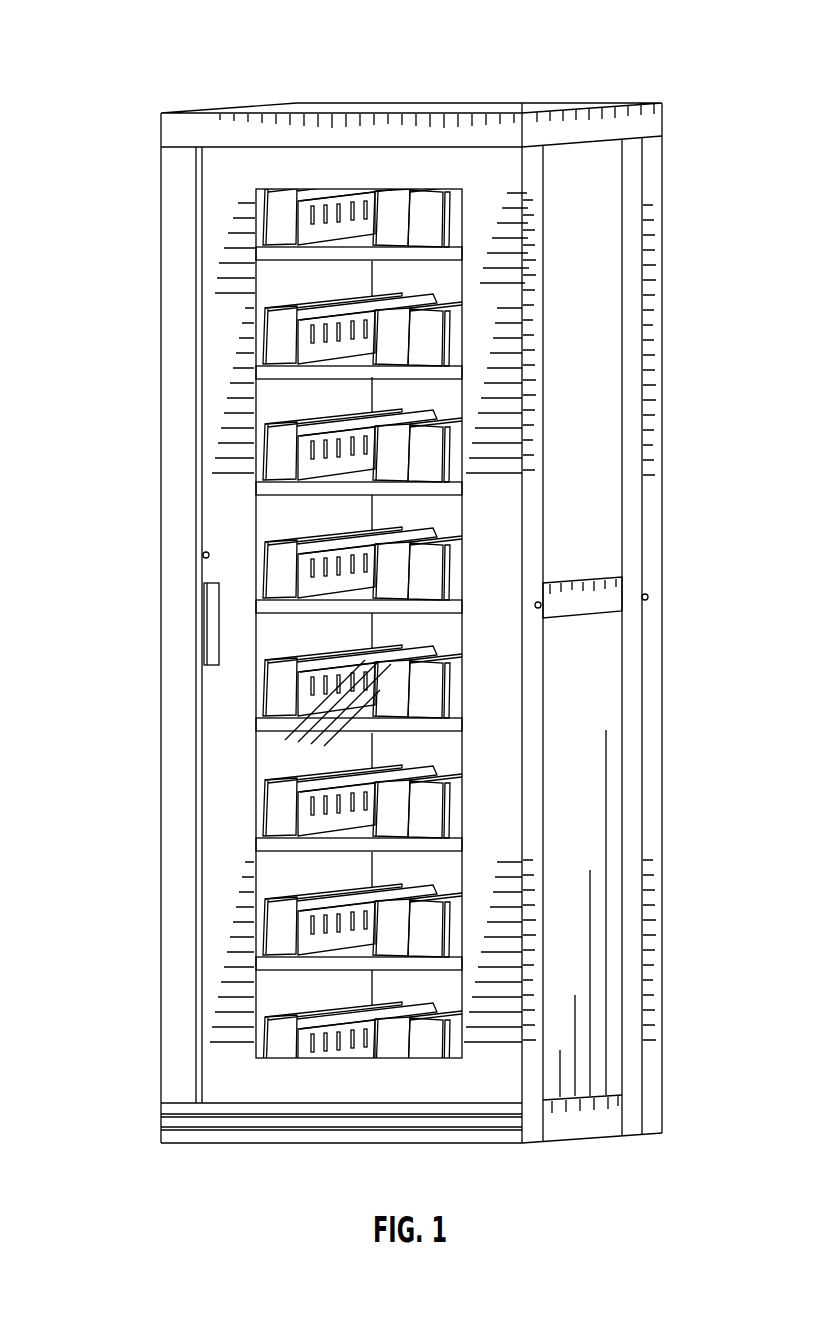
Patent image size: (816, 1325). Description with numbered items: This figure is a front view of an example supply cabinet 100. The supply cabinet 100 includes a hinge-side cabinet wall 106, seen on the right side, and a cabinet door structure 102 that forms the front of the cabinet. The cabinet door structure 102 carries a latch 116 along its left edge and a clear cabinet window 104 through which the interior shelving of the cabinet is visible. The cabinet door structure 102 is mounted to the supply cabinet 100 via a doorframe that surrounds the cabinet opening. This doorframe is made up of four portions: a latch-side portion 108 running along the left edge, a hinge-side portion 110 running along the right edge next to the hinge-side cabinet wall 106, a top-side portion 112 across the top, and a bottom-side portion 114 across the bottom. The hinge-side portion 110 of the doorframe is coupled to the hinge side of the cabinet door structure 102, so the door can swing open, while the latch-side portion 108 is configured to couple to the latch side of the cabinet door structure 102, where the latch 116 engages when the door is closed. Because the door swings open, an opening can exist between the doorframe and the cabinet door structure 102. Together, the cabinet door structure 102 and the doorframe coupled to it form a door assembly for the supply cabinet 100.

The supply cabinet 100 is at (672, 48).
The cabinet door structure 102 is at (227, 468).
The clear cabinet window 104 is at (290, 507).
The hinge-side cabinet wall 106 is at (598, 692).
The latch-side portion 108 is at (177, 212).
The hinge-side portion 110 is at (533, 303).
The top-side portion 112 is at (457, 118).
The bottom-side portion 114 is at (170, 1122).
The latch 116 is at (212, 619).